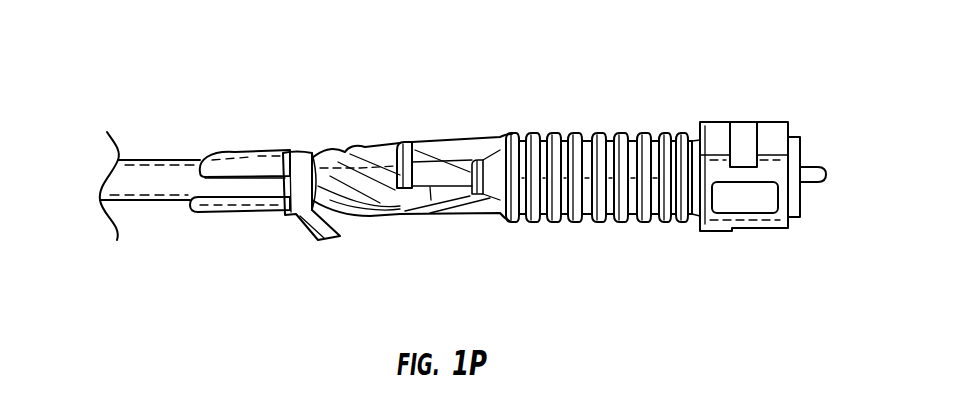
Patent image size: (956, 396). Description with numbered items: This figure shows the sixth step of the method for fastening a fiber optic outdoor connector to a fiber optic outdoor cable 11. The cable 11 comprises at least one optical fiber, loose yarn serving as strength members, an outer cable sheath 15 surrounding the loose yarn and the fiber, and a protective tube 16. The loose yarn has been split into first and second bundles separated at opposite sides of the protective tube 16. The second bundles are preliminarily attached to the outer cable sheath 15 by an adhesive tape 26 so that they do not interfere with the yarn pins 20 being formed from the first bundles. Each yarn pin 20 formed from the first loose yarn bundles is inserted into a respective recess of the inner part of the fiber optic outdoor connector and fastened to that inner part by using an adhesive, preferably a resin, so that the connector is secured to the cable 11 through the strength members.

The fiber optic outdoor cable 11 is at (136, 124).
The outer cable sheath 15 is at (148, 192).
The adhesive tape 26 is at (303, 160).
The yarn pin 20 is at (465, 140).
The protective tube 16 is at (804, 172).